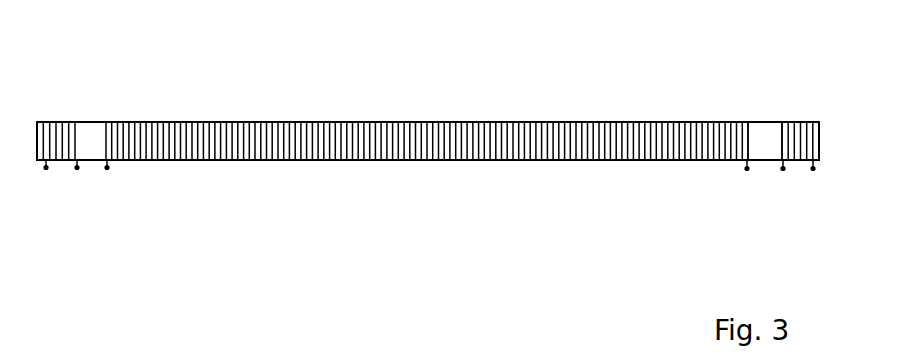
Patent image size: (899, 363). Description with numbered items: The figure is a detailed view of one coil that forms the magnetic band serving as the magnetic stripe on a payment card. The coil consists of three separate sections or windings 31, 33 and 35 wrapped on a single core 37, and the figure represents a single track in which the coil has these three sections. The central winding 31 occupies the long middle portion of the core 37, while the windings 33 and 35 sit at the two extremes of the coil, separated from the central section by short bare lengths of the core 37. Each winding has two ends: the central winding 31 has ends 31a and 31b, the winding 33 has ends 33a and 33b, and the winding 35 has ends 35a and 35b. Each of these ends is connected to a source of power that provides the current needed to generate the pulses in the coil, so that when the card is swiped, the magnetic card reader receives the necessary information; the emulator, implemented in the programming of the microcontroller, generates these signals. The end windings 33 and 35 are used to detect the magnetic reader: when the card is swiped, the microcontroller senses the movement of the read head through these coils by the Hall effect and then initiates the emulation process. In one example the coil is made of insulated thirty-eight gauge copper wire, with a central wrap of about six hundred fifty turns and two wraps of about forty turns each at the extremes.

The winding 31 is at (408, 121).
The end of winding 31a is at (107, 172).
The end of winding 31b is at (747, 173).
The winding 33 is at (803, 121).
The end of winding 33a is at (783, 173).
The end of winding 33b is at (813, 173).
The winding 35 is at (57, 121).
The end of winding 35a is at (45, 172).
The end of winding 35b is at (77, 172).
The core 37 is at (764, 121).